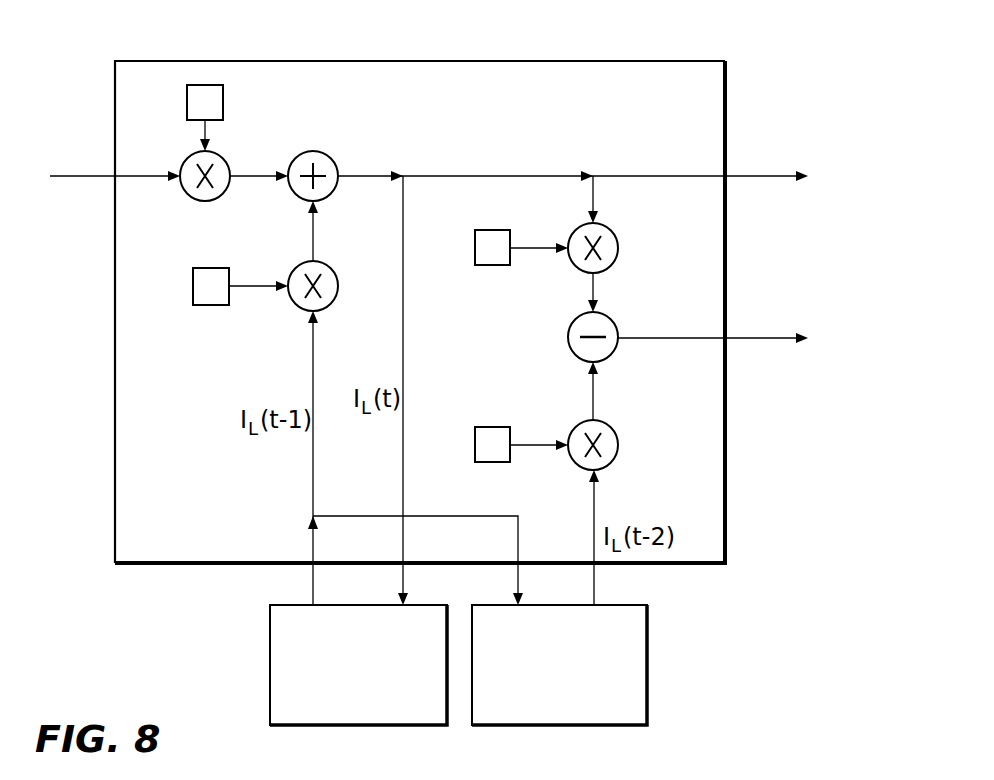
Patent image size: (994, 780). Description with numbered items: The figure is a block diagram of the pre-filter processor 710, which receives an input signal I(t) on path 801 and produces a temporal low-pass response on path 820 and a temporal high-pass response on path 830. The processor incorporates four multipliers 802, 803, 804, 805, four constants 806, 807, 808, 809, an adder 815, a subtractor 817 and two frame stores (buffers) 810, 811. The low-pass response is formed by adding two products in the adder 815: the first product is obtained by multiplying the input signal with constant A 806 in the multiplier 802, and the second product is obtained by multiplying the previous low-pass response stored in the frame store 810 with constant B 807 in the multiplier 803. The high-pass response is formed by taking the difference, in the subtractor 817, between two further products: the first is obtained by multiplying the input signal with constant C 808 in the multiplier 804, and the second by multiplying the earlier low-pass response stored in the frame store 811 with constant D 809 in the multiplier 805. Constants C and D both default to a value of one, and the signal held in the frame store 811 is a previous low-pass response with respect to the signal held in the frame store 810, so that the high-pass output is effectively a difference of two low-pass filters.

The pre-filter processor 710 is at (630, 41).
The path 801 is at (77, 133).
The multiplier 802 is at (185, 193).
The multiplier 803 is at (332, 270).
The multiplier 804 is at (618, 251).
The multiplier 805 is at (615, 458).
The constant A 806 is at (223, 103).
The constant B 807 is at (205, 268).
The constant C 808 is at (508, 267).
The constant D 809 is at (502, 427).
The frame store (buffer) 810 is at (270, 678).
The frame store (buffer) 811 is at (647, 680).
The adder 815 is at (331, 160).
The subtractor 817 is at (614, 354).
The path 820 is at (757, 174).
The path 830 is at (753, 336).